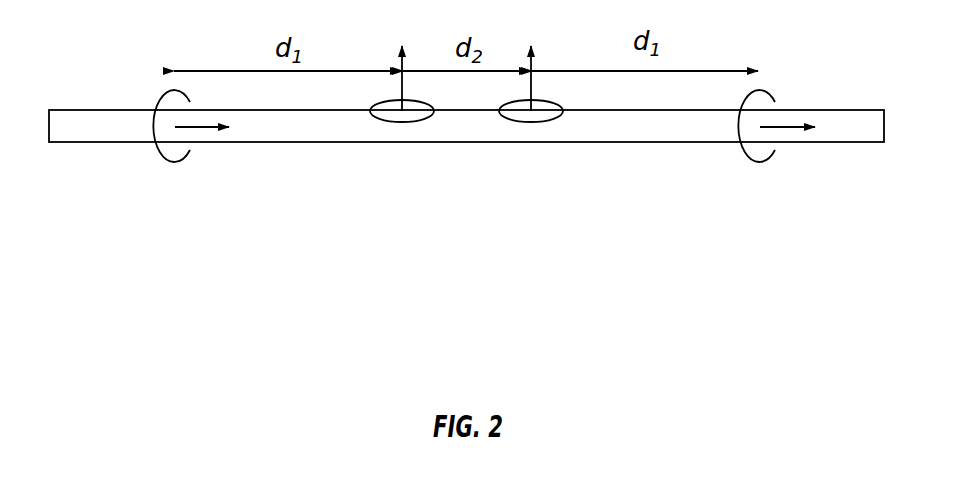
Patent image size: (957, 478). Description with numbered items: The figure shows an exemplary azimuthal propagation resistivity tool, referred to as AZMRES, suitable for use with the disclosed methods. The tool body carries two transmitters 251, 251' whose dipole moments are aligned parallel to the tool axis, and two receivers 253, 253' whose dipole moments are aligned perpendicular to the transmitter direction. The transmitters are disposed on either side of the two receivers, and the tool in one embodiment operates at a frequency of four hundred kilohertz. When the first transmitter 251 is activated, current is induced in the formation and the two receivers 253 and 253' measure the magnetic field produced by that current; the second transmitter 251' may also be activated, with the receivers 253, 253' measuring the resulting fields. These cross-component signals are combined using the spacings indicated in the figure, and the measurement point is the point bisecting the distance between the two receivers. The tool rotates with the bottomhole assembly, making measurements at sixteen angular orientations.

The first transmitter 251 is at (151, 142).
The second transmitter 251' is at (733, 142).
The first receiver 253 is at (378, 111).
The second receiver 253' is at (505, 111).